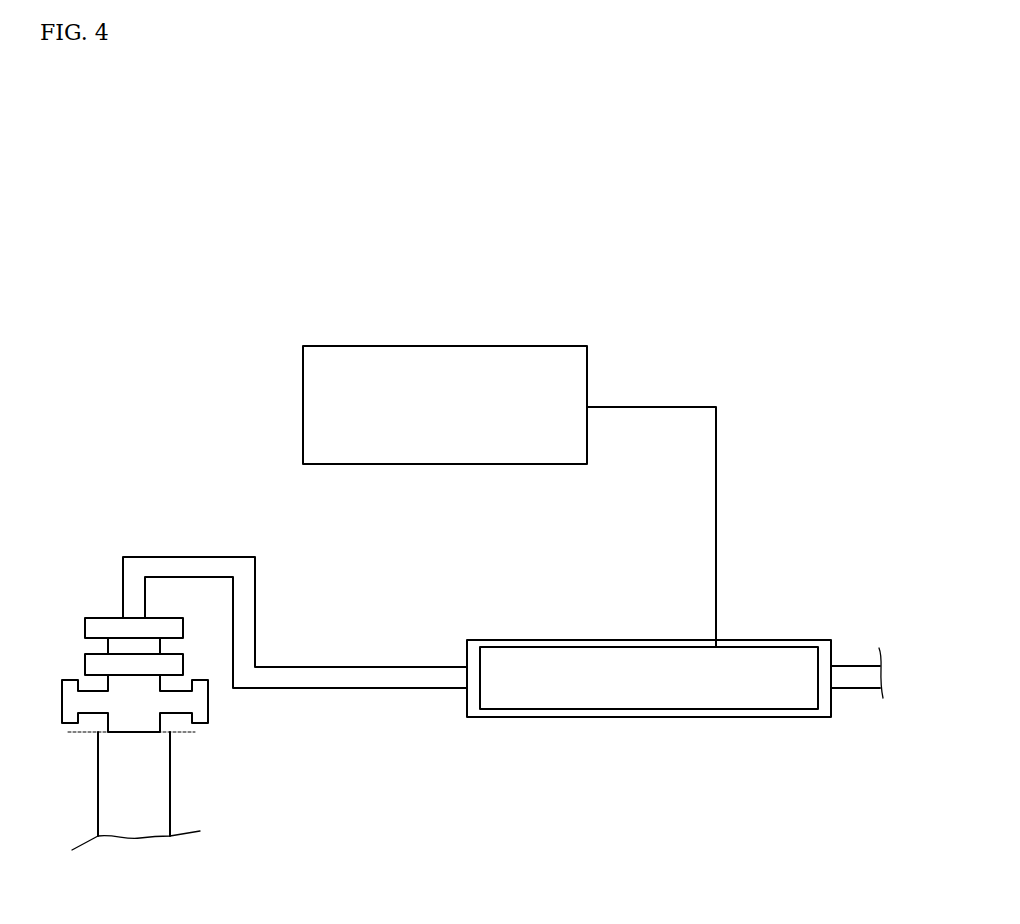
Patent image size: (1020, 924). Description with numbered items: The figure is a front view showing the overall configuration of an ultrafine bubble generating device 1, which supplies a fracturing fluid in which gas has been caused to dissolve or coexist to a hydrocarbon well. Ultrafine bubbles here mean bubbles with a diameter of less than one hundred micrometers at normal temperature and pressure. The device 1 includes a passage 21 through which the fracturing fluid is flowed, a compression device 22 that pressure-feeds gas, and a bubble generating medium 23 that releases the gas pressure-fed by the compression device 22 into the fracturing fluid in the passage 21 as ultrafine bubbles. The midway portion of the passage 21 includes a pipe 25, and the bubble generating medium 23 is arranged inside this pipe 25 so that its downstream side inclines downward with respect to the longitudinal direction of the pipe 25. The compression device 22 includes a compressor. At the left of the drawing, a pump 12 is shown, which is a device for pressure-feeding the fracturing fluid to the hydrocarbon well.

The ultrafine bubble generating device 1 is at (718, 390).
The pump 12 is at (107, 637).
The passage 21 is at (853, 666).
The compression device 22 is at (442, 346).
The bubble generating medium 23 is at (606, 663).
The pipe 25 is at (533, 640).